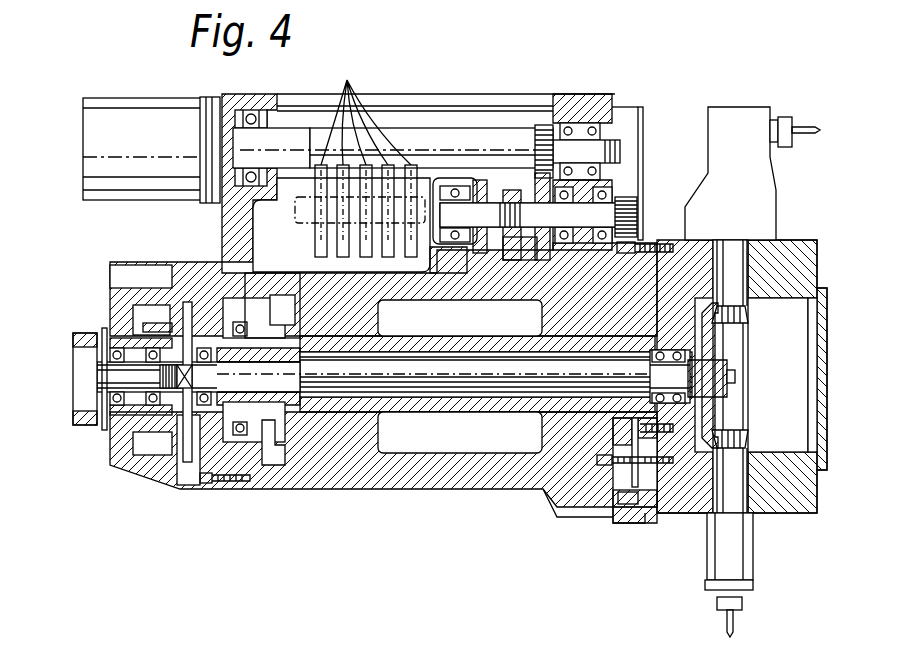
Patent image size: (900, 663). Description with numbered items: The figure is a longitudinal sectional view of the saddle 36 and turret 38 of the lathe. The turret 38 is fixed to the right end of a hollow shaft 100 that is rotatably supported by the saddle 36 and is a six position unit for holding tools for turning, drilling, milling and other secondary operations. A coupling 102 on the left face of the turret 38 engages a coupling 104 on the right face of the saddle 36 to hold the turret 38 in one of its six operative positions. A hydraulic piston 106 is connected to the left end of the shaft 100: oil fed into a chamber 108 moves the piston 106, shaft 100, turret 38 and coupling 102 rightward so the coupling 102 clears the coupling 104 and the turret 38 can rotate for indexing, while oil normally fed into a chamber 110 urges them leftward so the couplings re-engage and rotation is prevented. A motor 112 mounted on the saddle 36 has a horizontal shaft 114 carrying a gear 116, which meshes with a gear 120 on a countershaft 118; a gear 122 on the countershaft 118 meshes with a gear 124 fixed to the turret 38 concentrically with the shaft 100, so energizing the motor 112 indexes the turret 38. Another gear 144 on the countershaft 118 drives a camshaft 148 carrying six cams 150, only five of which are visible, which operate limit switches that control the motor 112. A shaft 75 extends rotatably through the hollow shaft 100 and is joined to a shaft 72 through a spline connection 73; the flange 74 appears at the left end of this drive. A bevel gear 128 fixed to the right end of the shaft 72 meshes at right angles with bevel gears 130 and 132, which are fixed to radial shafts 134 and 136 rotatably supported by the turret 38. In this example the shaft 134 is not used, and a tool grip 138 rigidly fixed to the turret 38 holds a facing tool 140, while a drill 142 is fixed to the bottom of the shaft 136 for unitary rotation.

The saddle 36 is at (330, 490).
The turret 38 is at (823, 263).
The shaft 72 is at (97, 382).
The spline connection 73 is at (170, 410).
The flange 74 is at (82, 333).
The shaft 75 is at (465, 385).
The hollow shaft 100 is at (400, 412).
The coupling 102 is at (665, 505).
The coupling 104 is at (548, 492).
The hydraulic piston 106 is at (282, 292).
The chamber 108 is at (237, 483).
The chamber 110 is at (275, 452).
The motor 112 is at (146, 98).
The shaft 114 is at (435, 140).
The gear 116 is at (545, 125).
The countershaft 118 is at (641, 140).
The gear 120 is at (530, 246).
The gear 122 is at (600, 210).
The gear 124 is at (650, 240).
The bevel gear 128 is at (728, 358).
The bevel gear 130 is at (740, 325).
The bevel gear 132 is at (748, 440).
The radial shaft 134 is at (745, 308).
The radial shaft 136 is at (747, 553).
The tool grip 138 is at (740, 107).
The tool 140 is at (800, 125).
The drill 142 is at (735, 627).
The gear 144 is at (483, 205).
The camshaft 148 is at (298, 213).
The cams 150 is at (366, 109).